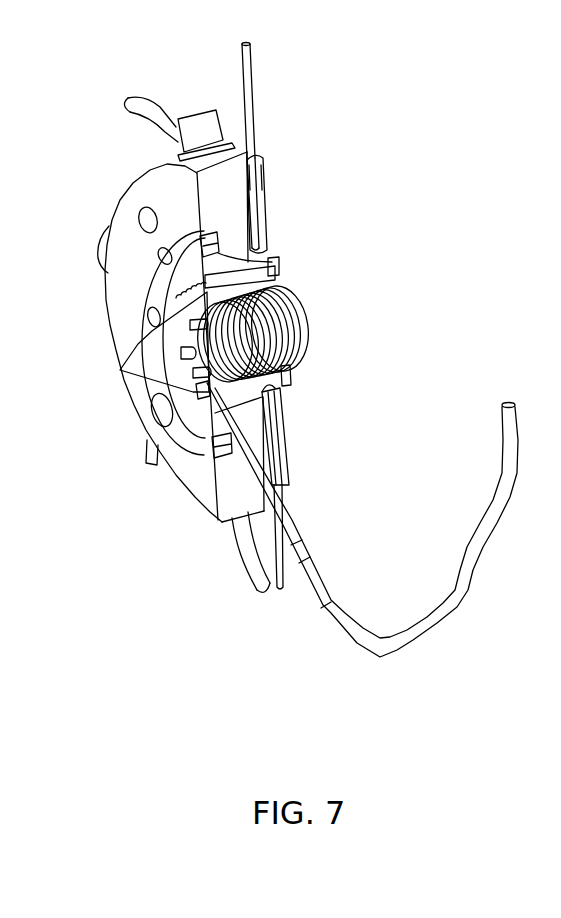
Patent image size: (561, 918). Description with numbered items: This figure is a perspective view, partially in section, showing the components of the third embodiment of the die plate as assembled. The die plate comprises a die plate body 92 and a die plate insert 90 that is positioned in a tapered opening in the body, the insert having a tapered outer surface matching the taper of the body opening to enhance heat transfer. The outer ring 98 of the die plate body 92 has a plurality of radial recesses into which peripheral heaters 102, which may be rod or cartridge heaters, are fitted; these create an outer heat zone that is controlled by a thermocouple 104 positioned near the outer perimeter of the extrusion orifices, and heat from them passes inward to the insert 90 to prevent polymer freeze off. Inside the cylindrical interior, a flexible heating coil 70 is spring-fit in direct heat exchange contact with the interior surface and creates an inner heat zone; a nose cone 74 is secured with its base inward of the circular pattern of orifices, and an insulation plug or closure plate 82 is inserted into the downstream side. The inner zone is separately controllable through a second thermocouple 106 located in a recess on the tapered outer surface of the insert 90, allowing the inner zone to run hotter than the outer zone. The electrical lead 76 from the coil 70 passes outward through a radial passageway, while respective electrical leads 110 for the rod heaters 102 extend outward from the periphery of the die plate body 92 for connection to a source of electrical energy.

The heating coil 70 is at (282, 368).
The nose cone 74 is at (152, 362).
The electrical leads 76 is at (463, 590).
The insulation plug or closure plate 82 is at (297, 328).
The die plate insert 90 is at (245, 270).
The die plate body 92 is at (118, 289).
The outer ring 98 is at (139, 259).
The peripheral heaters 102 is at (208, 128).
The thermocouple 104 is at (252, 110).
The second thermocouple 106 is at (282, 588).
The electrical leads 110 is at (152, 107).